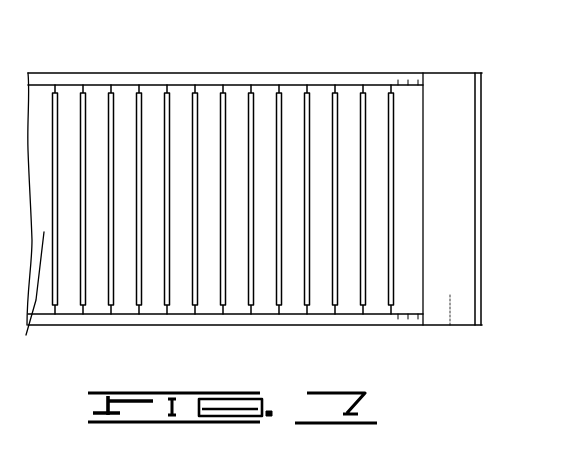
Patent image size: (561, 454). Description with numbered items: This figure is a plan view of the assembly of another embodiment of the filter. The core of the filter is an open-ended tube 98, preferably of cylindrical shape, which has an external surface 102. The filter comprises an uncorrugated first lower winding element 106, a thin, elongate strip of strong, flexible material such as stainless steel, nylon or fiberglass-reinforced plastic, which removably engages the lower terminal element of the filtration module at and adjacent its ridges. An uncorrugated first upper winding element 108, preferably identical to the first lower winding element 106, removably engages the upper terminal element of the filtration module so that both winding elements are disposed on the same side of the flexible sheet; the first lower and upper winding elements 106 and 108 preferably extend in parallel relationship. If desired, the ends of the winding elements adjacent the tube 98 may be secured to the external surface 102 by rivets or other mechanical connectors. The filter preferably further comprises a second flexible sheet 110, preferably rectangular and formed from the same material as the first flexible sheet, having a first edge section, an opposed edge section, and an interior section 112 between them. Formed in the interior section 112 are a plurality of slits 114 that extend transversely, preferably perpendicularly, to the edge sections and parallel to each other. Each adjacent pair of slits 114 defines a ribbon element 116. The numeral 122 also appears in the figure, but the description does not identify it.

The open-ended tube 98 is at (457, 81).
The external surface 102 is at (460, 126).
The first lower winding element 106 is at (328, 318).
The first upper winding element 108 is at (318, 79).
The second flexible sheet 110 is at (36, 103).
The interior section 112 is at (26, 335).
The slits 114 is at (257, 103).
The ribbon element 116 is at (100, 300).
The assembly 122 is at (560, 418).